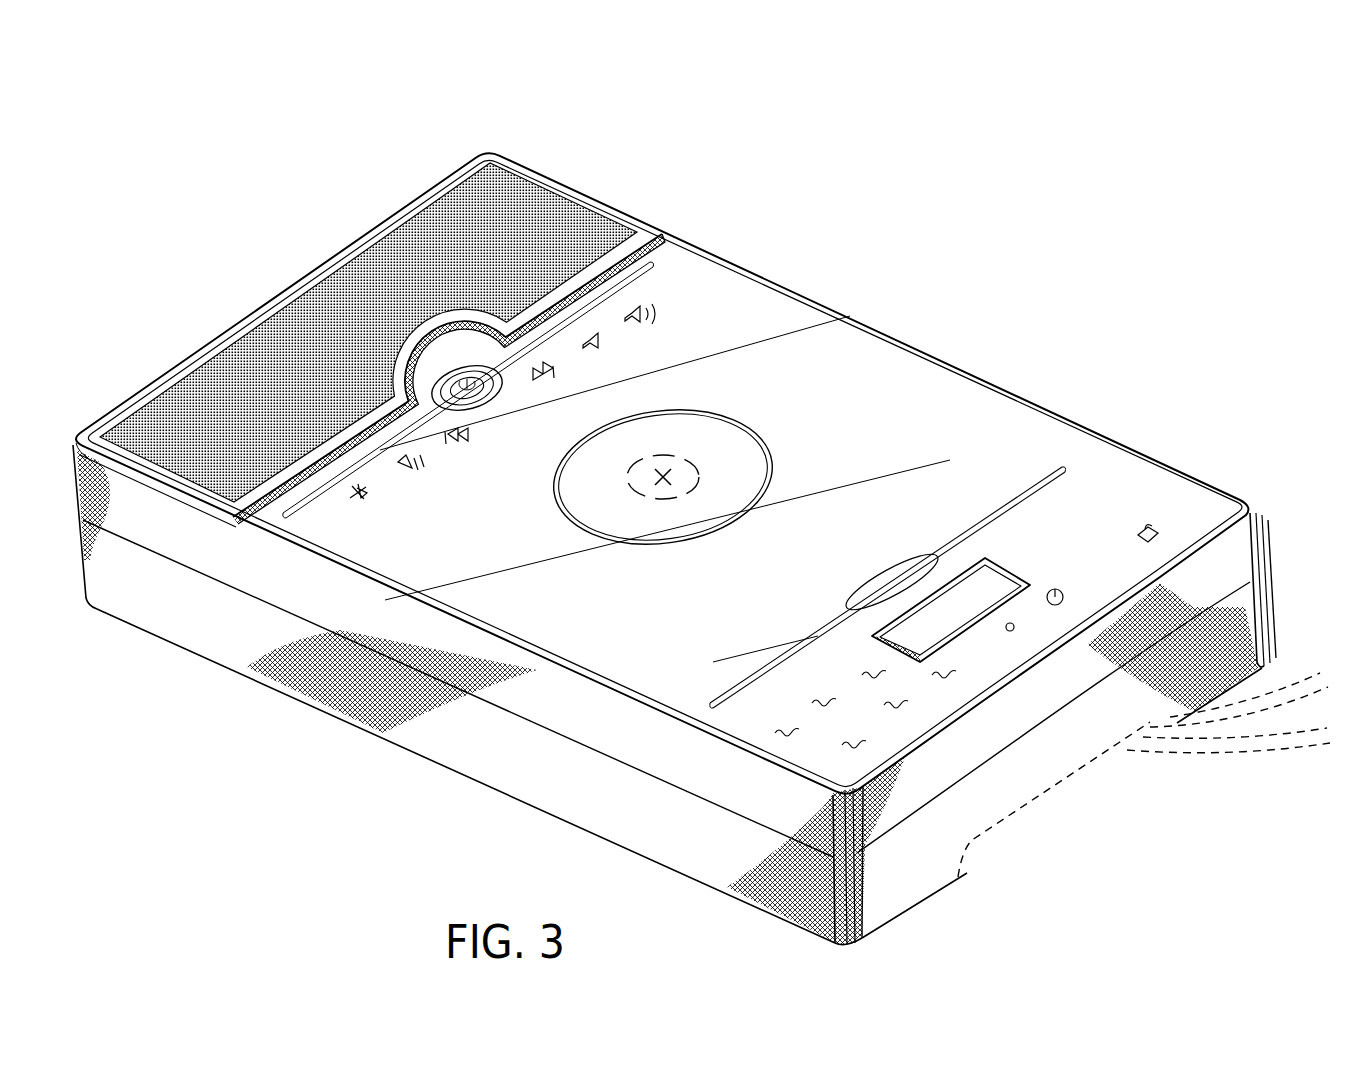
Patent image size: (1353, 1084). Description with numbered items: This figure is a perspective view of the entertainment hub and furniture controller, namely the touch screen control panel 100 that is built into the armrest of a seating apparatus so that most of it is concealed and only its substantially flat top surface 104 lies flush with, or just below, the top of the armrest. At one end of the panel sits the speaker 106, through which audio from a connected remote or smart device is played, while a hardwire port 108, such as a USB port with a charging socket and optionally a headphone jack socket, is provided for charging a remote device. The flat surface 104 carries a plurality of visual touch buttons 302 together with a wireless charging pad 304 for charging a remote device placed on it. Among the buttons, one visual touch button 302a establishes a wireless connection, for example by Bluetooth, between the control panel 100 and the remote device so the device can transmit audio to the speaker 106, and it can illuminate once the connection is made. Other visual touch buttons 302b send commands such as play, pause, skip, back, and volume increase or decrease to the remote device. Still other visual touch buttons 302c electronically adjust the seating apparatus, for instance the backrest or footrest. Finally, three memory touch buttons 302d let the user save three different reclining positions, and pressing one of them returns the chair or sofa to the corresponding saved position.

The touch screen control panel 100 is at (730, 182).
The substantially flat top surface 104 is at (905, 415).
The speaker 106 is at (520, 212).
The hardwire port 108 is at (970, 613).
The visual touch buttons 302 is at (650, 300).
The wireless connection touch button 302a is at (352, 505).
The media command touch buttons 302b is at (565, 380).
The seating adjustment touch buttons 302c is at (785, 710).
The memory touch buttons 302d is at (1093, 493).
The wireless charging pad 304 is at (714, 440).